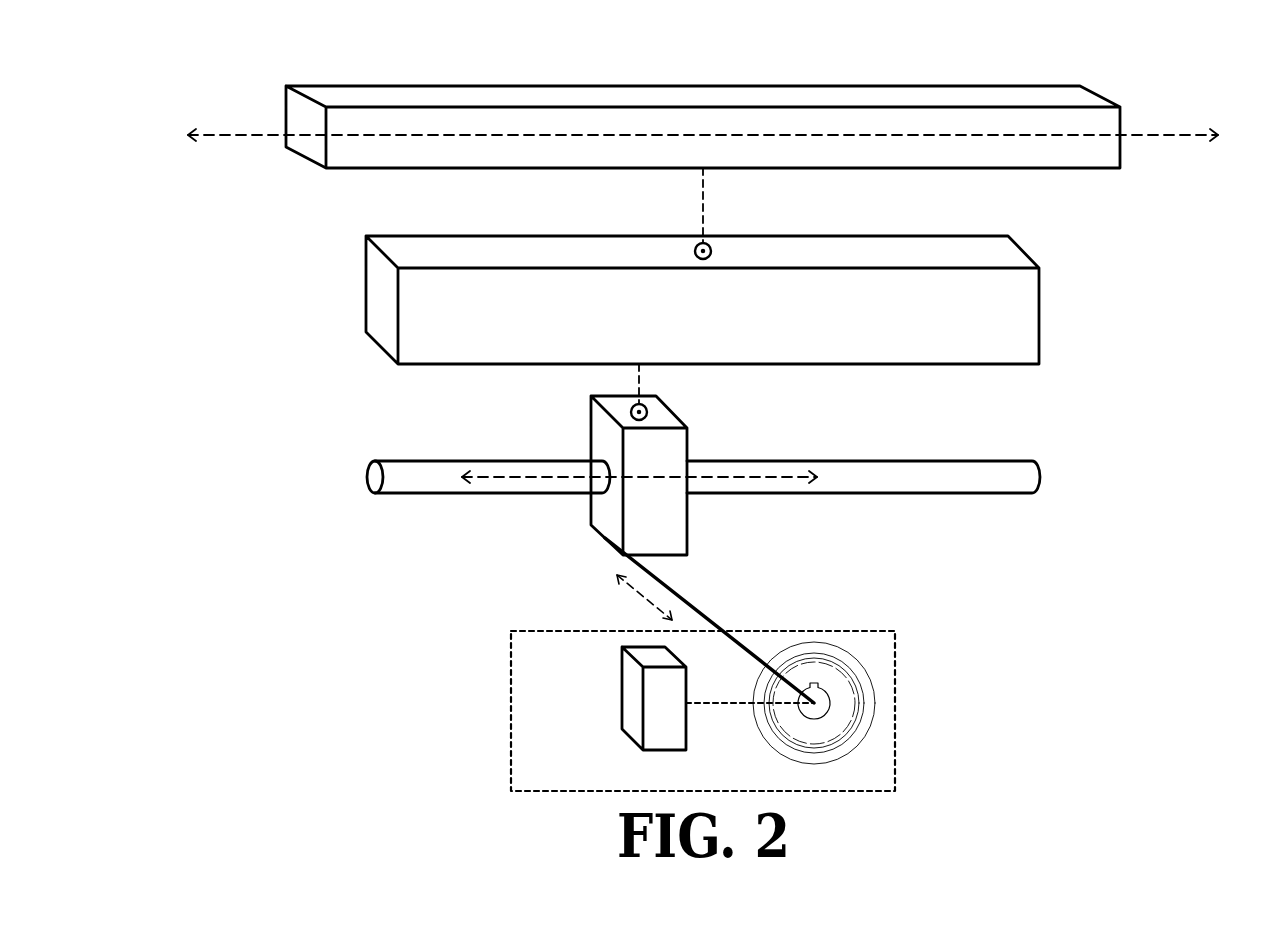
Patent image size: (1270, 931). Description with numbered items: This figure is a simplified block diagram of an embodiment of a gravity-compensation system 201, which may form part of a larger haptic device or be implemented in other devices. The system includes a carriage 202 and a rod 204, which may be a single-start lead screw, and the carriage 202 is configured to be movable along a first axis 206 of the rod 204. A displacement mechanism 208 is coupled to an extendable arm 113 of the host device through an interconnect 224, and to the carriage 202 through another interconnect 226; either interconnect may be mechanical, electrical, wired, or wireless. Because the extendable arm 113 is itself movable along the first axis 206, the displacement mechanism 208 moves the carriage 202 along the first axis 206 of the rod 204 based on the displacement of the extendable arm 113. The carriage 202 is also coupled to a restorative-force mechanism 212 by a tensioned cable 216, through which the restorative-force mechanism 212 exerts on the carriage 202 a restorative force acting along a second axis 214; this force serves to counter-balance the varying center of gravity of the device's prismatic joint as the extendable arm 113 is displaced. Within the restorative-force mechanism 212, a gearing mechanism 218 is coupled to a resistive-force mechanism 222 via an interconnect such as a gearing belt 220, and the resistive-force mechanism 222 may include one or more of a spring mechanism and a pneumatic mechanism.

The gravity-compensation system 201 is at (1208, 75).
The extendable arm 113 is at (298, 107).
The first axis 206 is at (1153, 137).
The displacement mechanism 208 is at (382, 267).
The interconnect 224 is at (702, 198).
The interconnect 226 is at (637, 375).
The carriage 202 is at (607, 430).
The rod 204 is at (377, 478).
The second axis 214 is at (633, 588).
The tensioned cable 216 is at (705, 612).
The restorative-force mechanism 212 is at (510, 697).
The resistive-force mechanism 222 is at (633, 672).
The gearing belt 220 is at (723, 703).
The gearing mechanism 218 is at (875, 695).